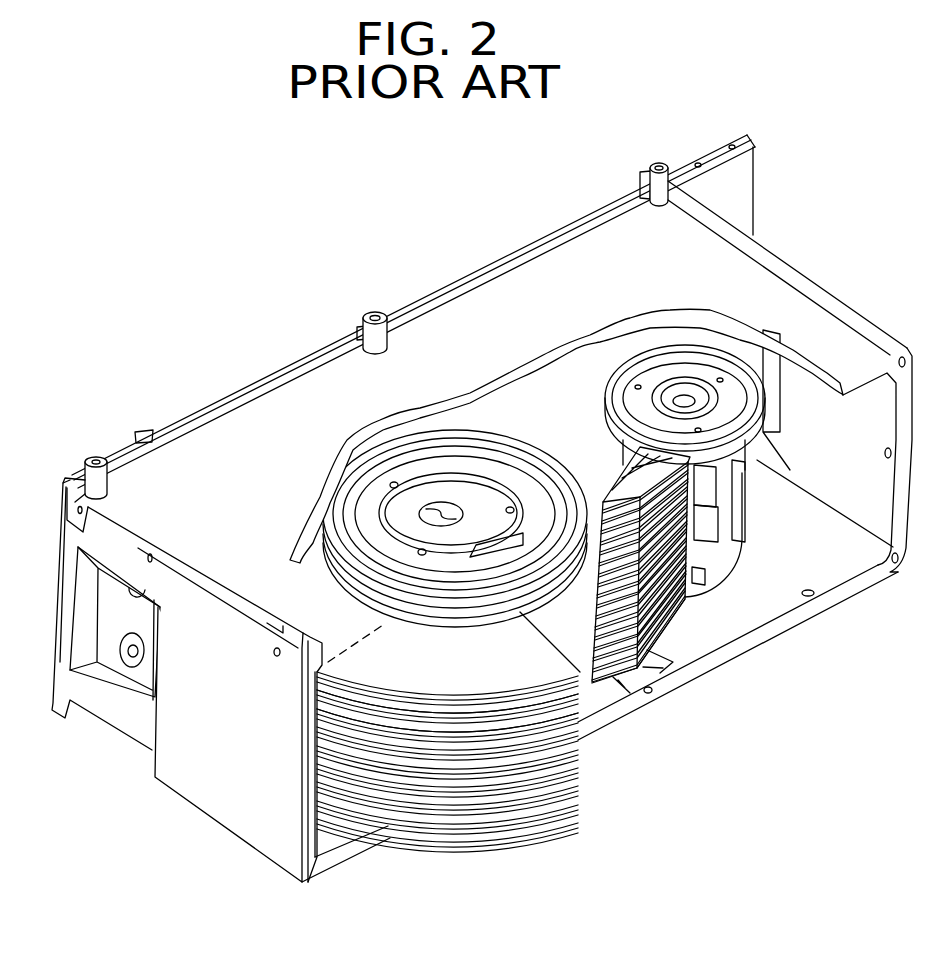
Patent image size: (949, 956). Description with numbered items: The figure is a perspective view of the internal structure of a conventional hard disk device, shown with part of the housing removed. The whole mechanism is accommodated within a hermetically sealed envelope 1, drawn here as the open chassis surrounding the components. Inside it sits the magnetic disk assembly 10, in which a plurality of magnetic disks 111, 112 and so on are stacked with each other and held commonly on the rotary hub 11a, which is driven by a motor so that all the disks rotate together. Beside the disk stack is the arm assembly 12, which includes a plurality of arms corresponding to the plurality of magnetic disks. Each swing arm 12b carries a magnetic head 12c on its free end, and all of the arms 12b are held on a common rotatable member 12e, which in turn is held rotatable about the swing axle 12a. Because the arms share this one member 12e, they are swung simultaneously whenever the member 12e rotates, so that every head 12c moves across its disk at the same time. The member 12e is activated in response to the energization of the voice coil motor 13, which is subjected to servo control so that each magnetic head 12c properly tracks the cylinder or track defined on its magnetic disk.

The hermetically sealed envelope 1 is at (482, 508).
The magnetic disk assembly 10 is at (548, 840).
The rotary hub 11a is at (415, 467).
The magnetic disk 111 is at (580, 747).
The magnetic disk 112 is at (593, 732).
The arm assembly 12 is at (663, 685).
The swing axle 12a is at (692, 385).
The swing arm 12b is at (610, 460).
The magnetic head 12c is at (627, 502).
The rotatable member 12e is at (712, 538).
The voice coil motor 13 is at (632, 343).